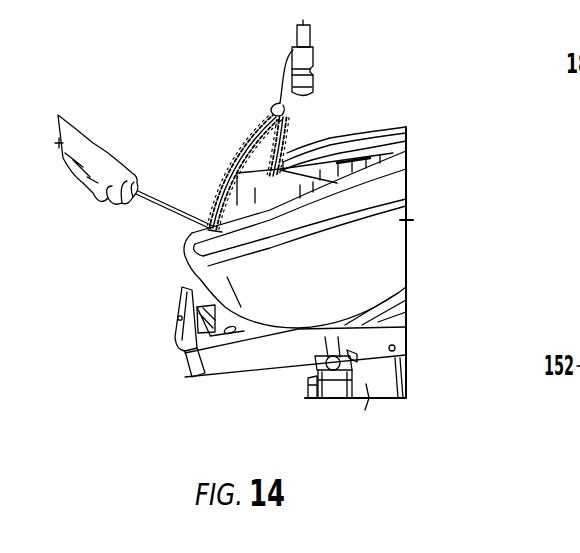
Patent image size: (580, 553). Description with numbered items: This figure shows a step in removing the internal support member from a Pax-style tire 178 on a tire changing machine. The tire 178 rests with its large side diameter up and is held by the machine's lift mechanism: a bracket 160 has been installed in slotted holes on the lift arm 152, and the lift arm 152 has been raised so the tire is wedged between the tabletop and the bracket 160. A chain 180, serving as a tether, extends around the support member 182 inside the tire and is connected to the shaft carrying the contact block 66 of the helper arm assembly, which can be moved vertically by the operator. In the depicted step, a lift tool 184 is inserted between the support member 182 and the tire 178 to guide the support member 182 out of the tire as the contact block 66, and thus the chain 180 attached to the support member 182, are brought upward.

The contact block 66 is at (313, 77).
The lift arm 152 is at (190, 373).
The bracket 160 is at (219, 332).
The Pax-style tire 178 is at (398, 253).
The chain 180 is at (246, 136).
The support member 182 is at (278, 193).
The lift tool 184 is at (171, 203).